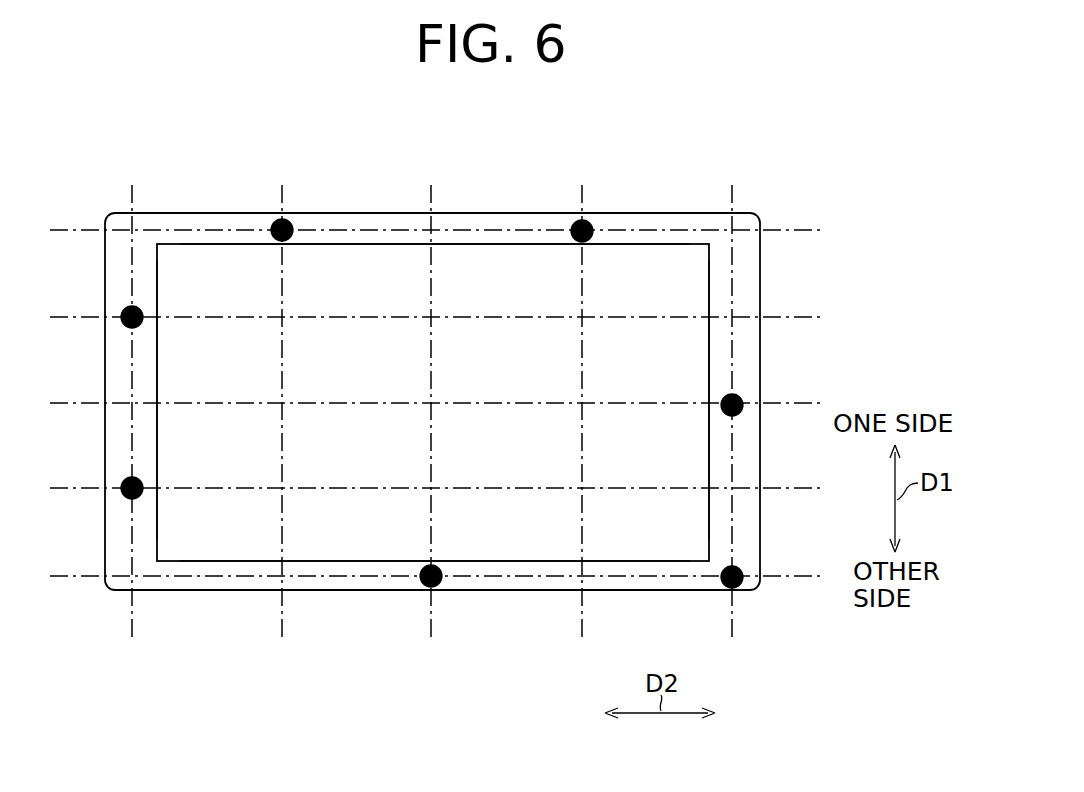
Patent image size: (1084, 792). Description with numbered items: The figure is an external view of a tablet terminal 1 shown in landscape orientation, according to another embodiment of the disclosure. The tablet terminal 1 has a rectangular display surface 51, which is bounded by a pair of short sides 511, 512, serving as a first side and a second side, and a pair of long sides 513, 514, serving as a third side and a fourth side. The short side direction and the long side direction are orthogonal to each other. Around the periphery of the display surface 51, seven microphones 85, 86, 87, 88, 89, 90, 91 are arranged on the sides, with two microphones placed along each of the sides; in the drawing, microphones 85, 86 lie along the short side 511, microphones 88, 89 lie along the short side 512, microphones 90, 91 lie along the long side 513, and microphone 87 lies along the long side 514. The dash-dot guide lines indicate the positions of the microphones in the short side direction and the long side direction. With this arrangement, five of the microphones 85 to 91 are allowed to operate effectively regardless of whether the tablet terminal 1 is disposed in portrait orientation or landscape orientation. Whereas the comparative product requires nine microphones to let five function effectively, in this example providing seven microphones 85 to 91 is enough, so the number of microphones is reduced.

The tablet terminal 1 is at (733, 130).
The display surface 51 is at (455, 285).
The short side 511 is at (709, 292).
The short side 512 is at (157, 358).
The long side 513 is at (663, 244).
The long side 514 is at (350, 563).
The microphone 85 is at (736, 396).
The microphone 86 is at (736, 568).
The microphone 87 is at (440, 580).
The microphone 88 is at (130, 484).
The microphone 89 is at (130, 312).
The microphone 90 is at (284, 220).
The microphone 91 is at (588, 222).